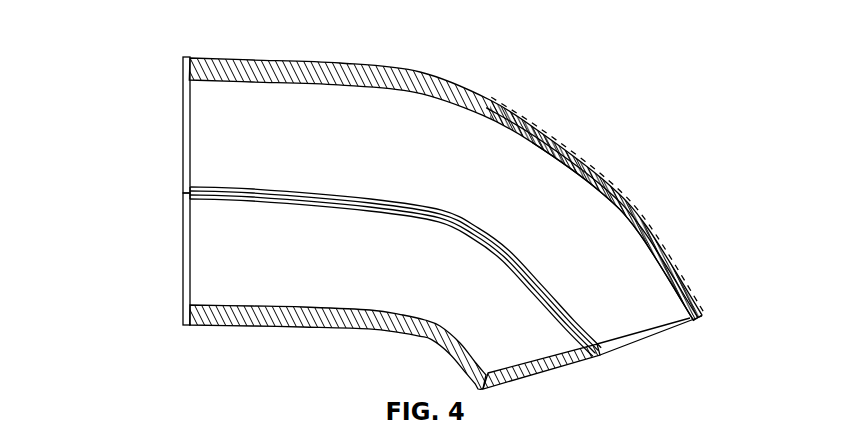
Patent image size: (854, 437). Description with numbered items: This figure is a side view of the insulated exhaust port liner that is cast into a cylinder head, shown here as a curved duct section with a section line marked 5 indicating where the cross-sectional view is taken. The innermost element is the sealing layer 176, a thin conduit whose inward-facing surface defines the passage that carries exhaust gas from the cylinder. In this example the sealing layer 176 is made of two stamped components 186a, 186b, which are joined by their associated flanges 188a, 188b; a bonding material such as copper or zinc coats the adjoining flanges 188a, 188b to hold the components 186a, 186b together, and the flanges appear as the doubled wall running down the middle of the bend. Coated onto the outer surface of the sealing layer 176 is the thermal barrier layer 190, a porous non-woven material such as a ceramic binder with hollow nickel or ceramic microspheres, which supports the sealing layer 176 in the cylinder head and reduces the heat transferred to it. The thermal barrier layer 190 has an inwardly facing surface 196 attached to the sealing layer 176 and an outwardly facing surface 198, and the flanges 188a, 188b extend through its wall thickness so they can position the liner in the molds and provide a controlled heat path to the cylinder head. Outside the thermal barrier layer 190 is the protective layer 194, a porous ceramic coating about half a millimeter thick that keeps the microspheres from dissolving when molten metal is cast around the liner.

The sealing layer 176 is at (176, 174).
The stamped component 186a is at (193, 130).
The stamped component 186b is at (218, 253).
The flange 188a is at (211, 187).
The flange 188b is at (212, 201).
The thermal barrier layer 190 is at (467, 97).
The protective layer 194 is at (397, 72).
The inwardly facing surface 196 is at (631, 233).
The outwardly facing surface 198 is at (644, 223).
The section line 5- 5 is at (253, 373).